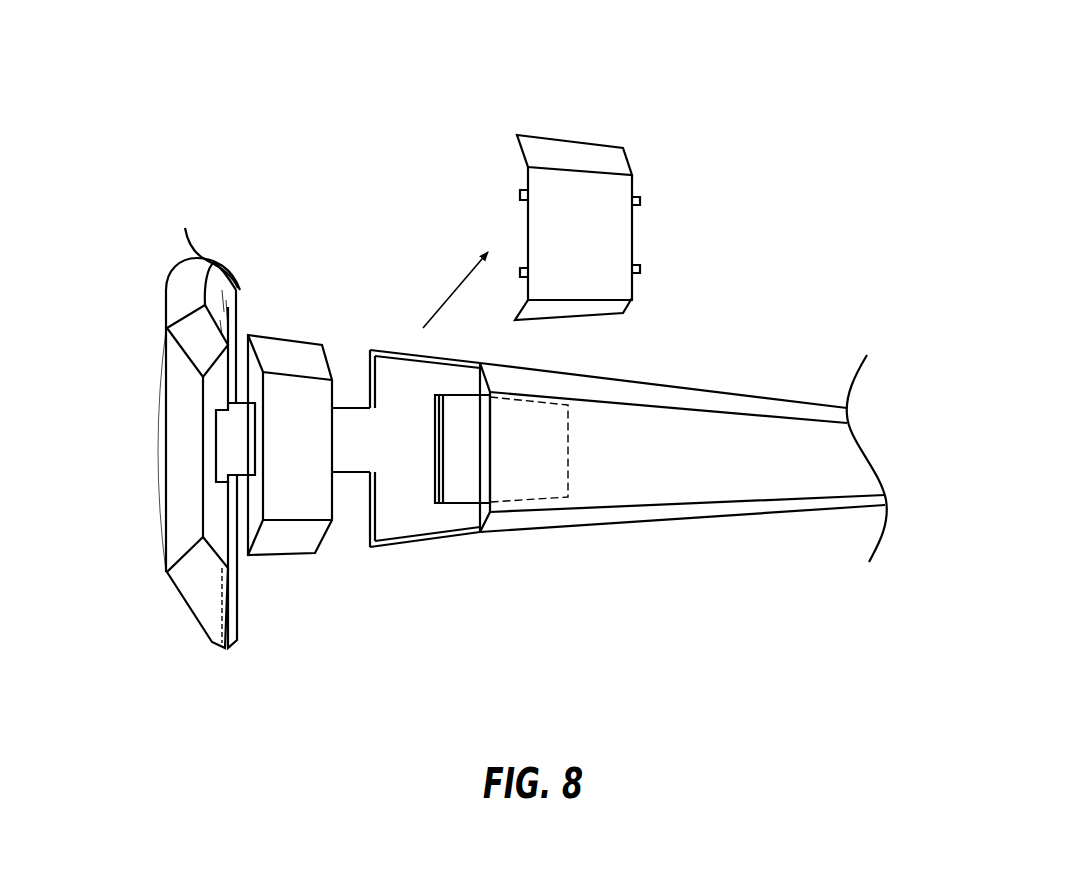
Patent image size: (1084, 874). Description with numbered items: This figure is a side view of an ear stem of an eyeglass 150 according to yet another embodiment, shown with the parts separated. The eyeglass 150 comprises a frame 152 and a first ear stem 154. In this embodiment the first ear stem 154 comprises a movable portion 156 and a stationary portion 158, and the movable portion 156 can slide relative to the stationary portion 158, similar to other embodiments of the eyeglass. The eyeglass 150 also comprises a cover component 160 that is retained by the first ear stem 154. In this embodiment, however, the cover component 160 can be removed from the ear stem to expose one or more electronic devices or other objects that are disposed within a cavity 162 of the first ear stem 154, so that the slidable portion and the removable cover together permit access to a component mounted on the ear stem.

The eyeglass 150 is at (452, 142).
The frame 152 is at (190, 608).
The first ear stem 154 is at (705, 392).
The movable portion 156 is at (296, 536).
The stationary portion 158 is at (523, 522).
The cover component 160 is at (600, 158).
The cavity 162 is at (382, 328).